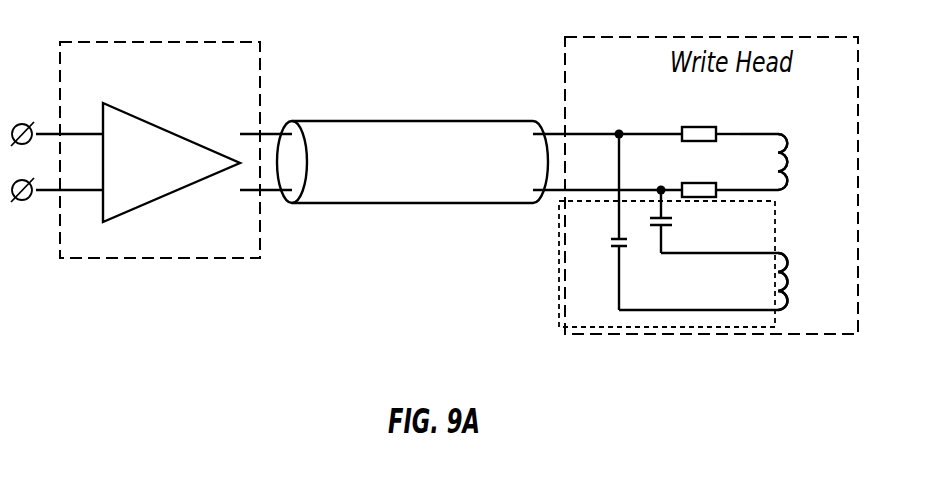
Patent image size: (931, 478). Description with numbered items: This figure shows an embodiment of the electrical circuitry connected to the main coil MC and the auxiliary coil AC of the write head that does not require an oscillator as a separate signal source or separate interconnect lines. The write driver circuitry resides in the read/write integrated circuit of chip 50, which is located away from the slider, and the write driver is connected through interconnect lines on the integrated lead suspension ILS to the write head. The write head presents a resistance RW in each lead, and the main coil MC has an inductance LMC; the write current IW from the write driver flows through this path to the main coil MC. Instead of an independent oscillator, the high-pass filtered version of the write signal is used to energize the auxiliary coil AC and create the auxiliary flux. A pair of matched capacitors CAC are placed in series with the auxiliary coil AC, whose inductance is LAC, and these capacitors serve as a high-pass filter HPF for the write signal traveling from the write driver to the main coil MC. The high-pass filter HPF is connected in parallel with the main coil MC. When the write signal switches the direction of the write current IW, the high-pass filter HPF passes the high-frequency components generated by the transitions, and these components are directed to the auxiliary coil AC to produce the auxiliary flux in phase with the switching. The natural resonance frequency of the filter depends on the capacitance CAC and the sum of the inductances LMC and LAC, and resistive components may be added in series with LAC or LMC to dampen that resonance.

The read/write integrated circuit chip 50 is at (80, 41).
The integrated lead suspension ILS is at (414, 122).
The high-pass filter HPF is at (560, 260).
The main coil MC is at (787, 158).
The auxiliary coil AC is at (787, 279).
The write head resistance RW is at (698, 117).
The write current IW is at (742, 114).
The main coil inductance LMC is at (751, 162).
The matched capacitor CAC is at (597, 222).
The auxiliary coil inductance LAC is at (703, 281).